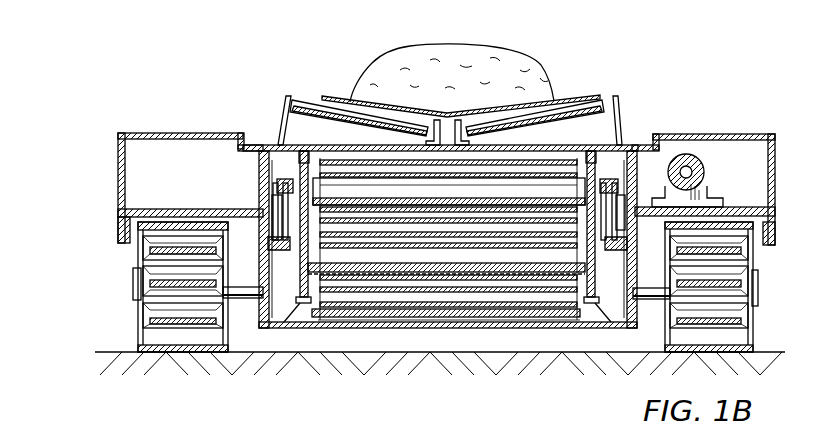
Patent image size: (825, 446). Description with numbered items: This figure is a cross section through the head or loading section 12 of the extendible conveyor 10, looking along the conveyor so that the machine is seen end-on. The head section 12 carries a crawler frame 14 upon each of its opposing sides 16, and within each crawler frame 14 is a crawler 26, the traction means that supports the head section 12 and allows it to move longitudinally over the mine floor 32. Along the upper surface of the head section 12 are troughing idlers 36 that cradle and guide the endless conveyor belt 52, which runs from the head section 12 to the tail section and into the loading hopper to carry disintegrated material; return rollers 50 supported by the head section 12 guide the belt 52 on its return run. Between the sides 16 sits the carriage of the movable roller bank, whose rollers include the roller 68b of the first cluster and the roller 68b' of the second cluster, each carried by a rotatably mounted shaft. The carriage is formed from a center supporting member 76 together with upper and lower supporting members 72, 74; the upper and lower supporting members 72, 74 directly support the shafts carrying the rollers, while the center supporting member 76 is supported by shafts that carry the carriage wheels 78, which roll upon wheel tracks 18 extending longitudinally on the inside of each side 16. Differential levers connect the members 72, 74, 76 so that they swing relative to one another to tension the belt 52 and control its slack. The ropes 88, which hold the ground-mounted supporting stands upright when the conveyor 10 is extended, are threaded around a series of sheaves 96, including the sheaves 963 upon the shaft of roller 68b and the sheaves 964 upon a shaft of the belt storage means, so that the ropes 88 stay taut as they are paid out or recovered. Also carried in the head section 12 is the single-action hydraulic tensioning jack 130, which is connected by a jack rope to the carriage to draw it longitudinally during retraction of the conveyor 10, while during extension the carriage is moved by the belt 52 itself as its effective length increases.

The extendible conveyor 10 is at (638, 61).
The head section 12 is at (444, 332).
The crawler frame 14 is at (128, 233).
The side 16 is at (262, 312).
The wheel track 18 is at (270, 243).
The crawler 26 is at (754, 318).
The floor 32 is at (98, 352).
The troughing idler 36 is at (293, 99).
The return roller 50 is at (563, 310).
The endless conveyor belt 52 is at (331, 96).
The roller 68b is at (448, 153).
The roller 68b' is at (449, 337).
The upper supporting member 72 is at (292, 182).
The lower supporting member 74 is at (284, 322).
The center supporting member 76 is at (311, 232).
The carriage wheel 78 is at (276, 200).
The rope 88 is at (302, 192).
The sheave 96 is at (448, 168).
The sheave 963 is at (632, 117).
The sheave 964 is at (698, 117).
The tensioning jack 130 is at (690, 160).